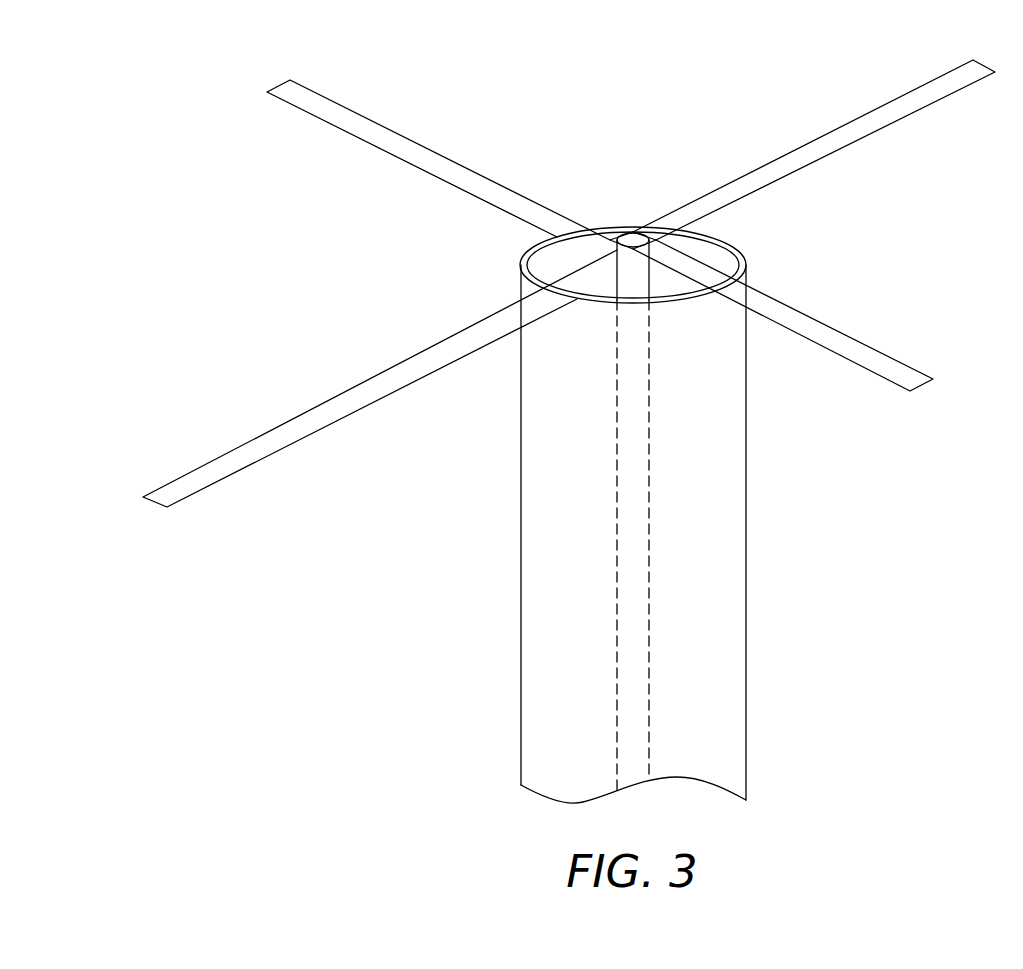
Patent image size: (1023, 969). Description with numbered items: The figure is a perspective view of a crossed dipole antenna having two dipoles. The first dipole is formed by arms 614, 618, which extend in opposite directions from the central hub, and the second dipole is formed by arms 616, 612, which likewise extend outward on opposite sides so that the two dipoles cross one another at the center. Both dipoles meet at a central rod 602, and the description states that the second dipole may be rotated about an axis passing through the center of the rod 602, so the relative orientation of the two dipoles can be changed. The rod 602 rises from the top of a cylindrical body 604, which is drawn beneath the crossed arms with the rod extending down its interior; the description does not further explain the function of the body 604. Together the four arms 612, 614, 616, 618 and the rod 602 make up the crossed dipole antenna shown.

The rod 602 is at (633, 235).
The cylindrical body 604 is at (521, 472).
The arm 612 is at (843, 347).
The arm 614 is at (878, 115).
The arm 616 is at (281, 90).
The arm 618 is at (280, 435).